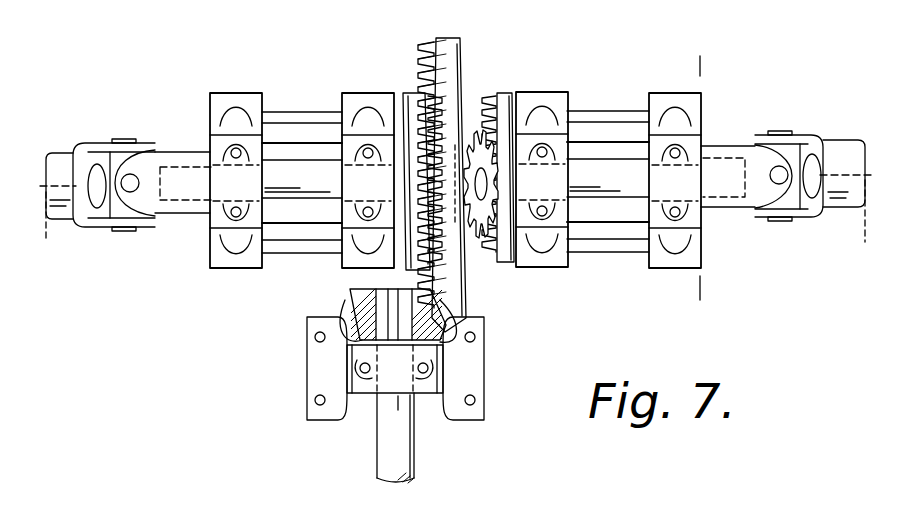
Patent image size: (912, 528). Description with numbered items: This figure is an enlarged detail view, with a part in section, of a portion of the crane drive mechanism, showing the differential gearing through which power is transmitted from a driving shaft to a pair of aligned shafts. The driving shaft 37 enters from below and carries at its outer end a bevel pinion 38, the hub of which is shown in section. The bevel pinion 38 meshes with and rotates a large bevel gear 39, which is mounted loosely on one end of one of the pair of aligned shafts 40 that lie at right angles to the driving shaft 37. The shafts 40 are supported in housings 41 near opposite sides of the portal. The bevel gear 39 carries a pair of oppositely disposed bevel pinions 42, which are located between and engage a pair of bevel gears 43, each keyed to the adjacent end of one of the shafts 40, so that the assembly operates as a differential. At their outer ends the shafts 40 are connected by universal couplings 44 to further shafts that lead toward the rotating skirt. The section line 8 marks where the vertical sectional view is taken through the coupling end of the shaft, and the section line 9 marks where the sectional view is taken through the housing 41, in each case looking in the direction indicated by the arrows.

The section line 8- 8 is at (78, 249).
The section line 9- 9 is at (688, 66).
The driving shaft 37 is at (414, 458).
The bevel pinion 38 is at (346, 302).
The bevel gear 39 is at (460, 42).
The aligned shaft 40 is at (606, 172).
The housing 41 is at (697, 116).
The bevel pinion 42 is at (482, 178).
The bevel gear 43 is at (410, 95).
The universal coupling 44 is at (790, 120).